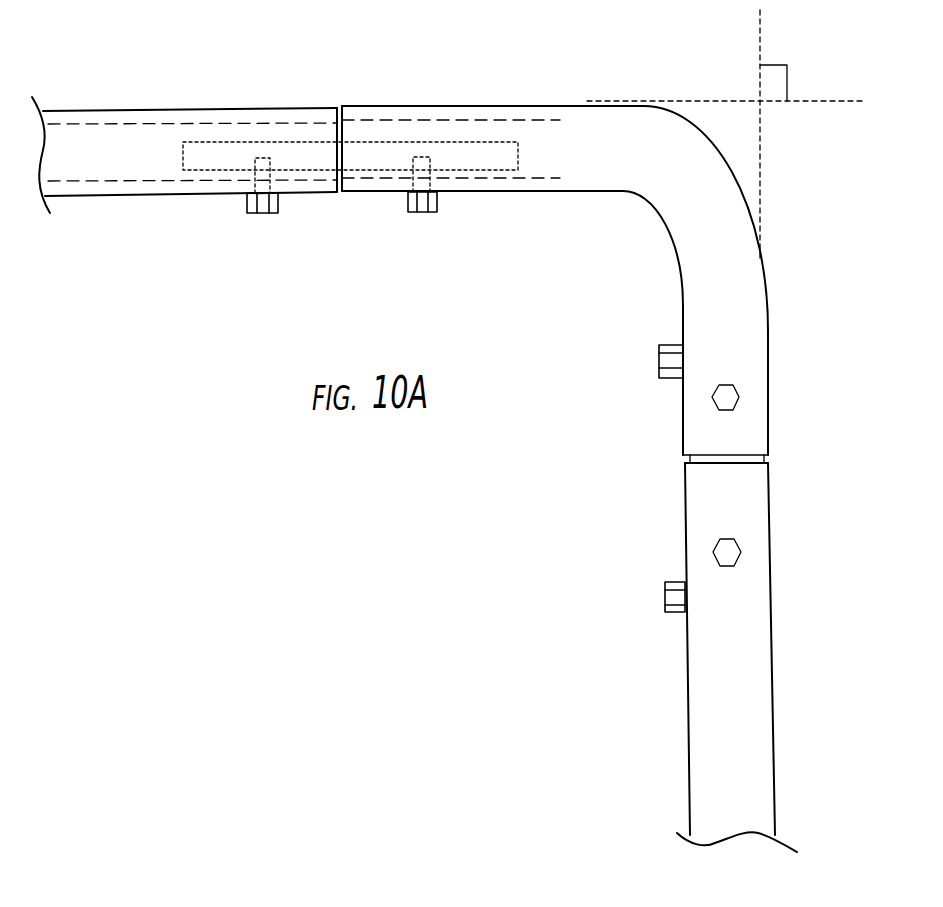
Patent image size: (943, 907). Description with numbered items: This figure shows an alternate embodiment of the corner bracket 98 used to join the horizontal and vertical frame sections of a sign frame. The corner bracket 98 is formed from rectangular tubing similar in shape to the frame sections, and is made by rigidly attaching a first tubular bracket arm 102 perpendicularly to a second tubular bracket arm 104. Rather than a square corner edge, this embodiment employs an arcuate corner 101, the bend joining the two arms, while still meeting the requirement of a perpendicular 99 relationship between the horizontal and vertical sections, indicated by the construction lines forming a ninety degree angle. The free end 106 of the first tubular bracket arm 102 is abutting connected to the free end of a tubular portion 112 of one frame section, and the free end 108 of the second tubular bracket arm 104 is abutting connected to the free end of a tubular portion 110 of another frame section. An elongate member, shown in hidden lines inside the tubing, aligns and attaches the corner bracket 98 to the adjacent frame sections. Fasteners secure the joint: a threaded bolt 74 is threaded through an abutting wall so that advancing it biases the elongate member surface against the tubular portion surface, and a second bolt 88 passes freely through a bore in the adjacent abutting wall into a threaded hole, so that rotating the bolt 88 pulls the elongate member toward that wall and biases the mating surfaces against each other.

The tubular portion 112 is at (309, 113).
The free end 106 is at (356, 114).
The first tubular bracket arm 102 is at (428, 108).
The arcuate corner 101 is at (720, 157).
The perpendicular relationship 99 is at (788, 80).
The corner bracket 98 is at (772, 286).
The second tubular bracket arm 104 is at (700, 321).
The free end 108 is at (695, 443).
The tubular portion 110 is at (755, 516).
The threaded bolt 74 is at (727, 538).
The second bolt 88 is at (278, 213).